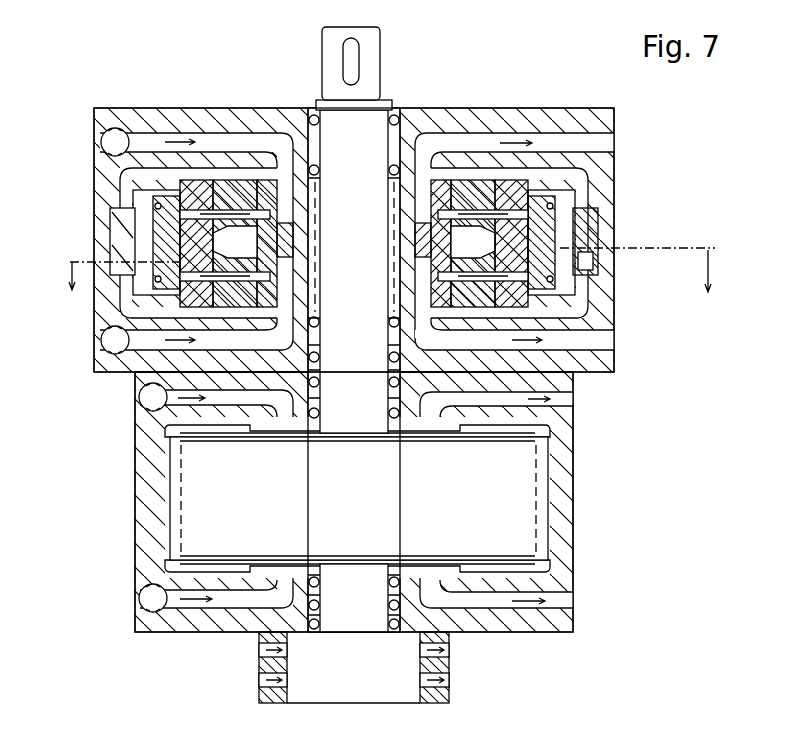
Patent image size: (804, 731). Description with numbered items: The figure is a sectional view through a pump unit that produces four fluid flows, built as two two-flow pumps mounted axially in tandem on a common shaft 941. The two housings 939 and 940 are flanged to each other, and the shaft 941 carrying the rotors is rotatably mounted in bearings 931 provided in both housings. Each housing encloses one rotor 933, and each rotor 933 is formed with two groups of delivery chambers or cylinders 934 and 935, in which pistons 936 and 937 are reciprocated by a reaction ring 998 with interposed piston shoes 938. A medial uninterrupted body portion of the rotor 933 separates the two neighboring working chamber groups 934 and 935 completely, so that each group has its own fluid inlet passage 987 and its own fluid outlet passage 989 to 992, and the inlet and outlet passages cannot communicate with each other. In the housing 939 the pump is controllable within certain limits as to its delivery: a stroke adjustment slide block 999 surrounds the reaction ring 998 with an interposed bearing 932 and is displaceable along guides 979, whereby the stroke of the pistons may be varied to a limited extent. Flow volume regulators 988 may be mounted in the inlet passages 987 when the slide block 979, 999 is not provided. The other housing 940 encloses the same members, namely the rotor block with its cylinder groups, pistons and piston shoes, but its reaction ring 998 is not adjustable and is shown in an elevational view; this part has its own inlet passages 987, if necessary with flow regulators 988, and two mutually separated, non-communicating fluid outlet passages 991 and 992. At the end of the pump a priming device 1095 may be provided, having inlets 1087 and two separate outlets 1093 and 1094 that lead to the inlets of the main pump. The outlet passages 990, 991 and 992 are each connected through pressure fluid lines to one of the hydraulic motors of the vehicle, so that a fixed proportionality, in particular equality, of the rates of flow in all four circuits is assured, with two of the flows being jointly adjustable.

The bearings 931 is at (316, 150).
The bearing 932 is at (612, 240).
The rotor 933 is at (443, 180).
The delivery chamber group 934 is at (285, 197).
The delivery chamber group 935 is at (407, 241).
The pistons 936 is at (282, 228).
The pistons 937 is at (268, 257).
The piston shoes 938 is at (175, 228).
The housing 939 is at (600, 198).
The housing 940 is at (560, 524).
The shaft 941 is at (382, 48).
The guides 979 is at (610, 268).
The fluid inlet passage 987 is at (100, 140).
The flow volume regulators 988 is at (103, 150).
The fluid outlet passage 989 is at (605, 143).
The fluid outlet passage 990 is at (606, 340).
The fluid outlet passage 991 is at (565, 398).
The fluid outlet passage 992 is at (563, 602).
The reaction ring 998 is at (558, 470).
The stroke adjustment slide block 999 is at (392, 266).
The inlets 1087 is at (262, 650).
The outlet 1093 is at (452, 650).
The outlet 1094 is at (452, 683).
The priming device 1095 is at (302, 665).